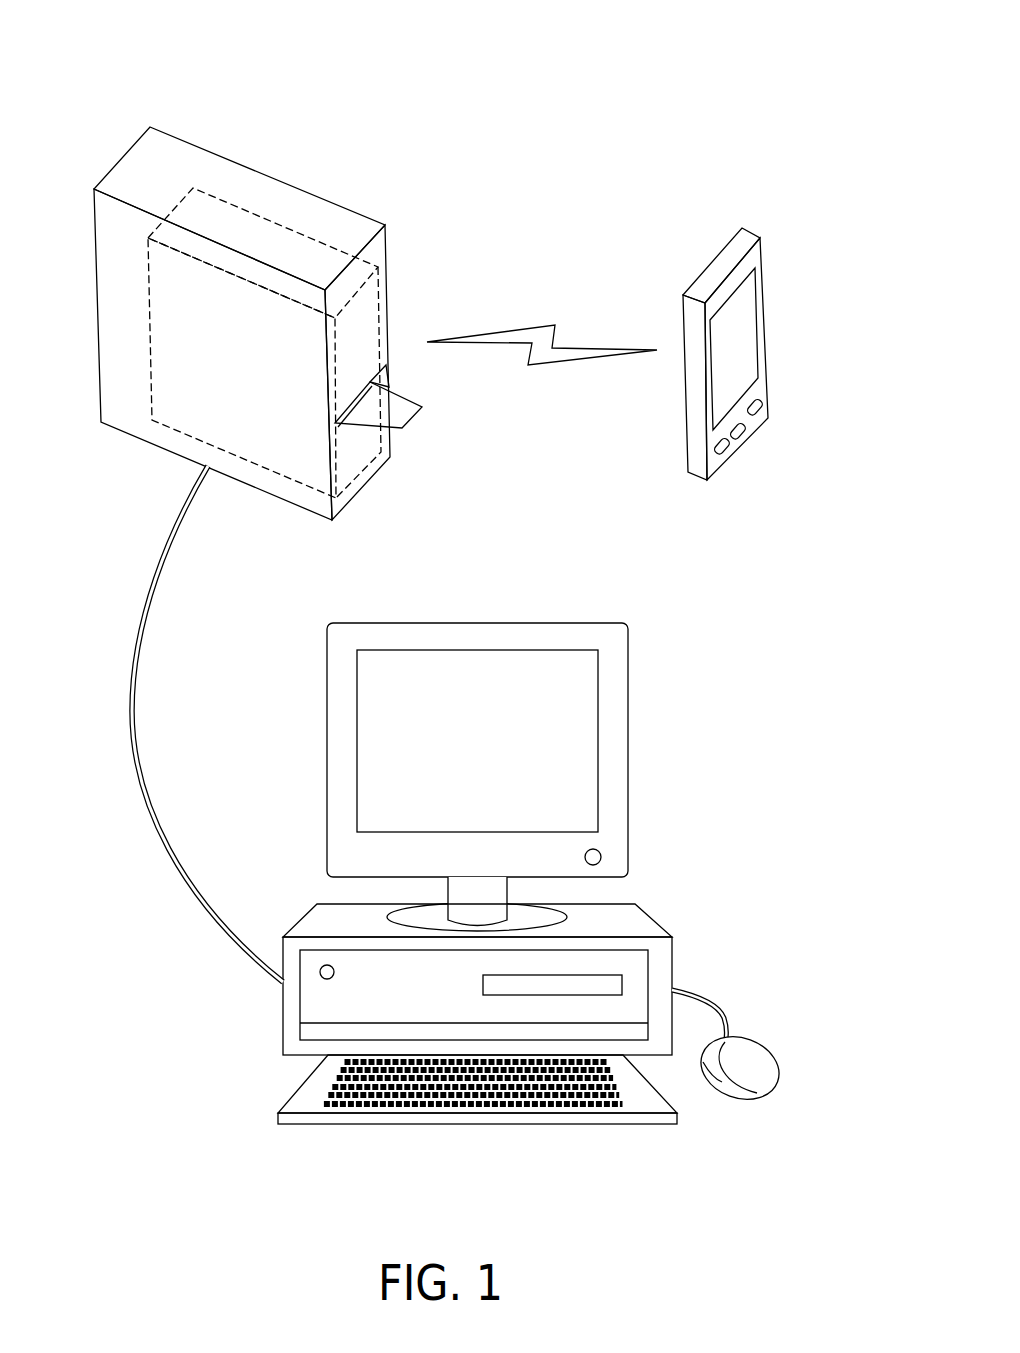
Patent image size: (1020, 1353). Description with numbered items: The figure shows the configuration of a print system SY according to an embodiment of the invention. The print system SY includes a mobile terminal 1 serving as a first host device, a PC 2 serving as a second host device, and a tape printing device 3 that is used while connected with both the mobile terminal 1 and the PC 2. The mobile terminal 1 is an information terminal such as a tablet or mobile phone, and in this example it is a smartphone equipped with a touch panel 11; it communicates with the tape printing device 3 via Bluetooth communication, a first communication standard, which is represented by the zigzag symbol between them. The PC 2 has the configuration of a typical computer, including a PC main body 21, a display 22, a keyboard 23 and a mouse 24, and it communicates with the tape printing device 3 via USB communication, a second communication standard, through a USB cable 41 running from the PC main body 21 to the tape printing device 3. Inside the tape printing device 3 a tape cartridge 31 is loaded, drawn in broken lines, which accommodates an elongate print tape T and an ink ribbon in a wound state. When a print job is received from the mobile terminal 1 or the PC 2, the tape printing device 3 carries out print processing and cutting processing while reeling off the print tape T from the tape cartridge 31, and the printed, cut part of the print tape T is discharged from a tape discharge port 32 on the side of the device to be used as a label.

The print system SY is at (721, 94).
The mobile terminal 1 is at (750, 323).
The touch panel 11 is at (745, 325).
The PC 2 is at (539, 894).
The PC main body 21 is at (655, 918).
The display 22 is at (632, 795).
The keyboard 23 is at (642, 1107).
The mouse 24 is at (757, 1060).
The tape printing device 3 is at (267, 323).
The tape cartridge 31 is at (275, 215).
The tape discharge port 32 is at (373, 368).
The print tape T is at (418, 407).
The USB cable 41 is at (130, 728).